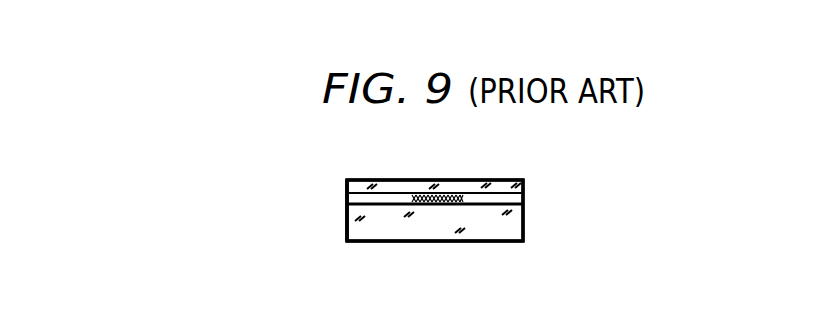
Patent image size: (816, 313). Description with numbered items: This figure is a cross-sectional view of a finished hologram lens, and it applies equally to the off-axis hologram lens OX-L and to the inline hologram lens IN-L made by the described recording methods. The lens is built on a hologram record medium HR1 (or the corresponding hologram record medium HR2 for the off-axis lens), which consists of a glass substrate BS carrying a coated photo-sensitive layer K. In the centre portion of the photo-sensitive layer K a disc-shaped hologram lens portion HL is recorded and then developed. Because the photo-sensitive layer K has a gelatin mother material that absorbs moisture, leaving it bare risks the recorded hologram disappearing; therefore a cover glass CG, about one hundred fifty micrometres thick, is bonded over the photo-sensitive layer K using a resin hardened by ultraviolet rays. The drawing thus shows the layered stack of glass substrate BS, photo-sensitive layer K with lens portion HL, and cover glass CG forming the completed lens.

The off-axis hologram lens OX-L is at (342, 204).
The inline hologram lens IN-L is at (305, 250).
The cover glass CG is at (523, 183).
The photo-sensitive layer K is at (523, 199).
The glass substrate BS is at (523, 232).
The inline hologram lens portion HL is at (430, 206).
The hologram record medium HR1 is at (605, 148).
The hologram record medium HR2 is at (755, 217).